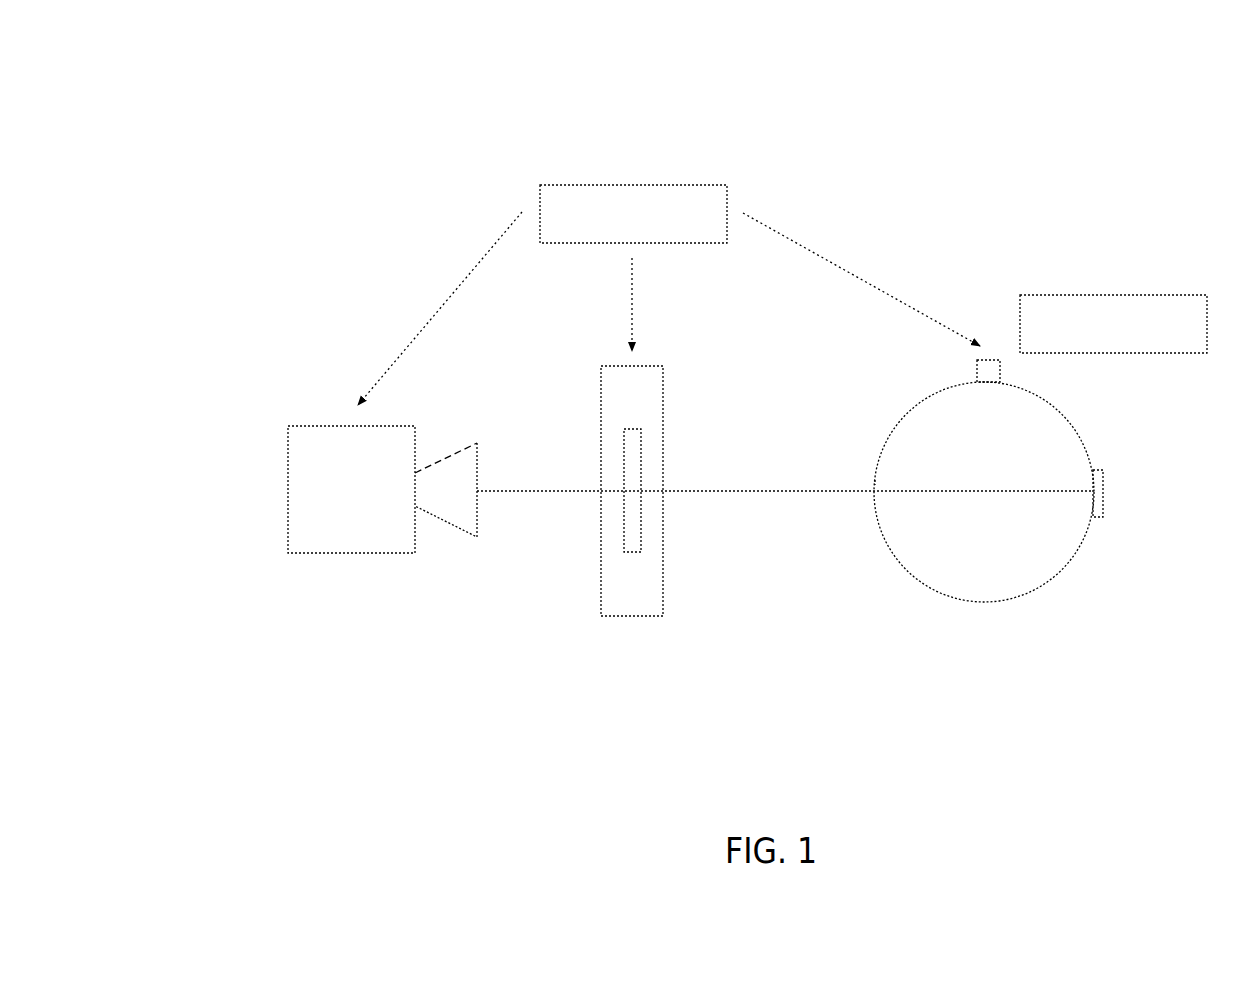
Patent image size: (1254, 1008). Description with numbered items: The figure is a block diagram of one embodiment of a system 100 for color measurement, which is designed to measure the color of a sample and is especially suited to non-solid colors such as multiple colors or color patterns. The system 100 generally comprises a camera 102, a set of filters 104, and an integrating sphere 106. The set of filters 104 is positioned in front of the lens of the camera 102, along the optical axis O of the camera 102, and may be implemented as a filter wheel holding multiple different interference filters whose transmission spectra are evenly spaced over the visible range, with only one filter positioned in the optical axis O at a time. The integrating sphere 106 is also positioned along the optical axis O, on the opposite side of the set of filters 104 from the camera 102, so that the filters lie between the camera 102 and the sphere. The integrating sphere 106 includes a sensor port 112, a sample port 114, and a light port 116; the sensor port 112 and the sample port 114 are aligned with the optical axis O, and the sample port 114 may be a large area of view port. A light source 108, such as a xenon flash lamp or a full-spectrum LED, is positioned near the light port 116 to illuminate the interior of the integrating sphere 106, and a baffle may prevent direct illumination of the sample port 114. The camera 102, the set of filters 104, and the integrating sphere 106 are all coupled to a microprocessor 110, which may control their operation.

The system 100 is at (190, 100).
The camera 102 is at (368, 499).
The set of filters 104 is at (623, 617).
The integrating sphere 106 is at (1044, 585).
The light source 108 is at (1129, 335).
The microprocessor 110 is at (649, 225).
The sensor port 112 is at (876, 478).
The sample port 114 is at (1110, 470).
The light port 116 is at (976, 366).
The optical axis O is at (543, 487).